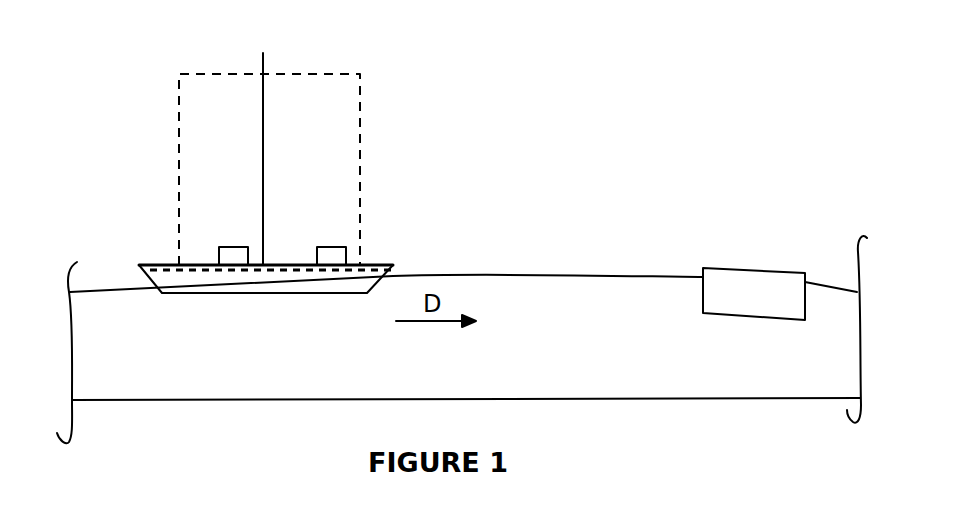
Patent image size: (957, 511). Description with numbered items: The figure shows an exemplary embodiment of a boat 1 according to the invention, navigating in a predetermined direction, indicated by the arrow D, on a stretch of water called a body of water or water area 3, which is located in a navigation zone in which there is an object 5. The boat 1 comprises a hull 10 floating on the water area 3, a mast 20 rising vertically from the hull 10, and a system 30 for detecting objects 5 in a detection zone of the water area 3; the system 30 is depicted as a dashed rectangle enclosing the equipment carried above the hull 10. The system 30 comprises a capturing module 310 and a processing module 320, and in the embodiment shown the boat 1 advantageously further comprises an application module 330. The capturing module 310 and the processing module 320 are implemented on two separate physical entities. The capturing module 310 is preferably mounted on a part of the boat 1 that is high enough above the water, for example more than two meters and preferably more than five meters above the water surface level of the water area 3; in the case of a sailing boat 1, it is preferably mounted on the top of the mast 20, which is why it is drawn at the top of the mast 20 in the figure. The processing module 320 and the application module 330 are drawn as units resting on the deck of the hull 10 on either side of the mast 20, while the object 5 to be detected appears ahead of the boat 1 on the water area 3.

The boat 1 is at (90, 118).
The water area 3 is at (613, 384).
The object 5 is at (786, 268).
The hull 10 is at (162, 272).
The mast 20 is at (263, 128).
The system for detecting objects 30 is at (211, 75).
The capturing module 310 is at (264, 102).
The processing module 320 is at (229, 247).
The application module 330 is at (330, 247).